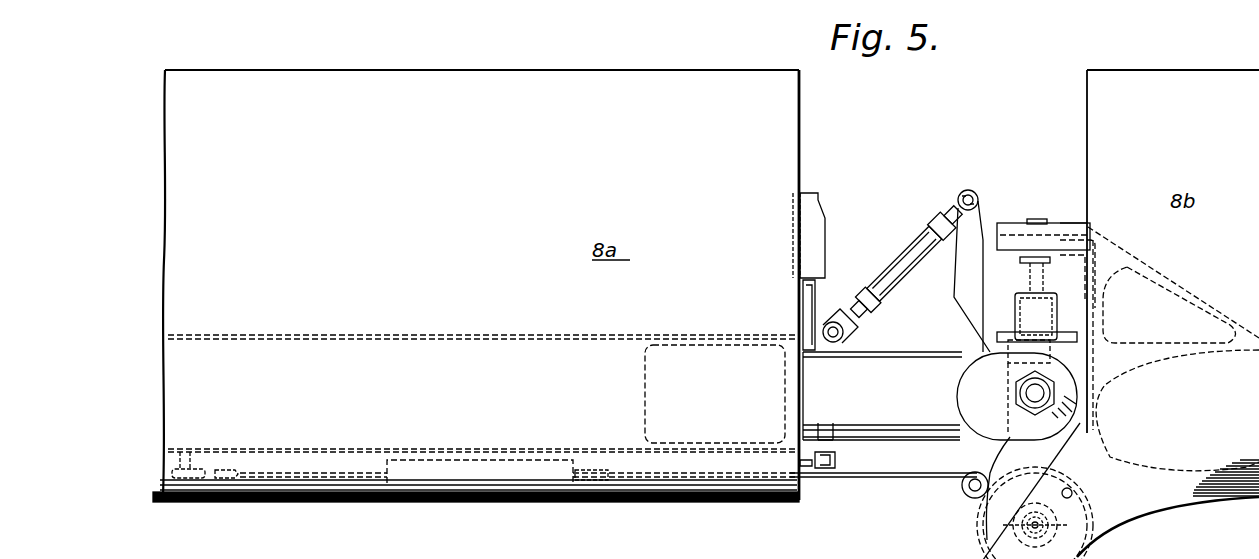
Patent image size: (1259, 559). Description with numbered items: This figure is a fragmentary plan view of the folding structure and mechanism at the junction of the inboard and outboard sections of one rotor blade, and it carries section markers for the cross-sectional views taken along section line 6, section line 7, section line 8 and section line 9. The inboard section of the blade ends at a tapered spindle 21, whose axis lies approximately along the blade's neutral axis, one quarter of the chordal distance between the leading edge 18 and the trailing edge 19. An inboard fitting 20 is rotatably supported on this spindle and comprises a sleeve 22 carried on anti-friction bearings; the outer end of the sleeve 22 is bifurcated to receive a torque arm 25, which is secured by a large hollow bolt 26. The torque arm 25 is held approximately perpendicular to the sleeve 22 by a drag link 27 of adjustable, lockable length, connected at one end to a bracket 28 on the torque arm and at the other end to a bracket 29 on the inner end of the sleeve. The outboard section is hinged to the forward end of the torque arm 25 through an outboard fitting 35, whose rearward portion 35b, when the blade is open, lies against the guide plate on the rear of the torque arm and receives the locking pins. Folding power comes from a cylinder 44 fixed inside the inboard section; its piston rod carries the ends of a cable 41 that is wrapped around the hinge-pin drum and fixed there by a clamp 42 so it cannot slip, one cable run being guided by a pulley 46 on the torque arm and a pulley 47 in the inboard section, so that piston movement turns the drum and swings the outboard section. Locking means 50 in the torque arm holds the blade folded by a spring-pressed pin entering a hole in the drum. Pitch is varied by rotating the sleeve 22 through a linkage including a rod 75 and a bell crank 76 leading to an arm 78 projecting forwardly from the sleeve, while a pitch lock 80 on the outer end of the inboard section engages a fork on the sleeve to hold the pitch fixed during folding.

The trailing edge 19 is at (688, 68).
The tapered spindle 21 is at (793, 376).
The rod 75 is at (493, 447).
The cylinder 44 is at (436, 460).
The pulley 47 is at (200, 468).
The leading edge 18 is at (773, 502).
The section line 6- 6 is at (173, 493).
The section line 7- 7 is at (608, 437).
The section line 8- 8 is at (823, 193).
The section line 9- 9 is at (993, 545).
The pitch lock 80 is at (827, 225).
The bracket 28 is at (968, 189).
The bracket 29 is at (833, 320).
The drag link 27 is at (900, 283).
The inboard fitting 20 is at (953, 347).
The hollow bolt 26 is at (1020, 392).
The sleeve 22 is at (915, 350).
The rearward portion 35b is at (1063, 227).
The arm 78 is at (827, 447).
The bell crank 76 is at (808, 466).
The cable 41 is at (887, 478).
The locking means 50 is at (993, 453).
The pulley 46 is at (965, 495).
The clamp 42 is at (1074, 492).
The torque arm 25 is at (1080, 447).
The outboard fitting 35 is at (1153, 507).